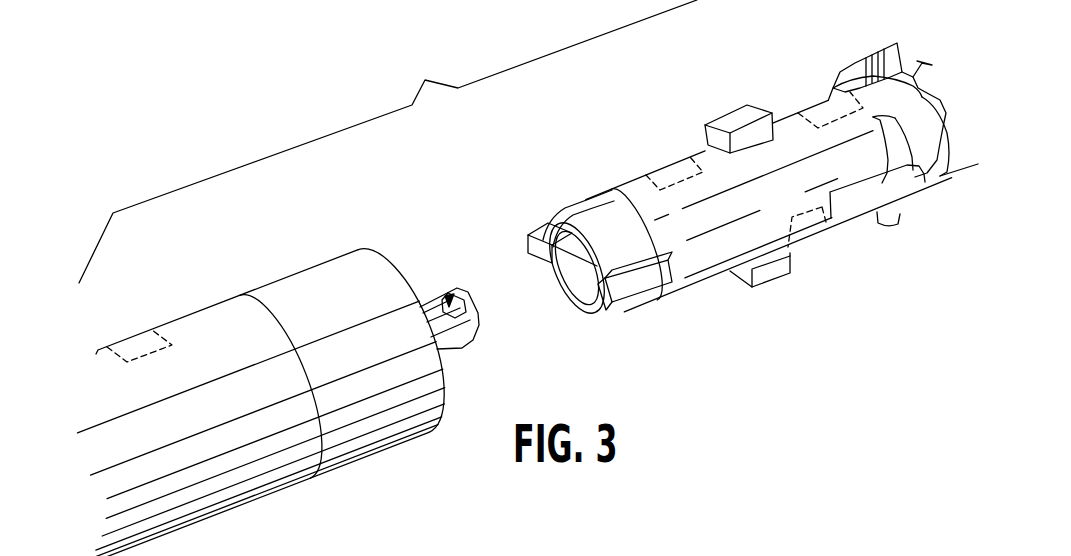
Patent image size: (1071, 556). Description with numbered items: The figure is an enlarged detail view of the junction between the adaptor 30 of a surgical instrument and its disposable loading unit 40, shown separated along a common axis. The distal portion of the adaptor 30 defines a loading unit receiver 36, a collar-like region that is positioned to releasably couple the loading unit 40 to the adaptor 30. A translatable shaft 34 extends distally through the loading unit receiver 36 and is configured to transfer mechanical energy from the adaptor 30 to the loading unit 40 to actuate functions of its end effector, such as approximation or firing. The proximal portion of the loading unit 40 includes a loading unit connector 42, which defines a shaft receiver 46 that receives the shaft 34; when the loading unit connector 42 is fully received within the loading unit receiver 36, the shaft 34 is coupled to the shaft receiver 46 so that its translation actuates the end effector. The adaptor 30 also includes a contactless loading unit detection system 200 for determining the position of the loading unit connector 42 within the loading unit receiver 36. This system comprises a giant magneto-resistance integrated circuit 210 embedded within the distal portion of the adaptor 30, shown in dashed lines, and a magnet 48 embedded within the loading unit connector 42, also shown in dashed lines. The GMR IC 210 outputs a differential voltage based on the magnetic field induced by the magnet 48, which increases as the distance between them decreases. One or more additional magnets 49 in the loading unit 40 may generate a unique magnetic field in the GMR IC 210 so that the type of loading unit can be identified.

The contactless loading unit detection system 200 is at (388, 278).
The adaptor 30 is at (221, 291).
The giant magneto-resistance integrated circuit (GMR IC) 210 is at (145, 342).
The loading unit receiver 36 is at (354, 262).
The translatable shaft 34 is at (450, 287).
The loading unit 40 is at (753, 187).
The loading unit connector 42 is at (780, 132).
The shaft receiver 46 is at (578, 278).
The magnet 48 is at (660, 176).
The additional magnets 49 is at (826, 102).